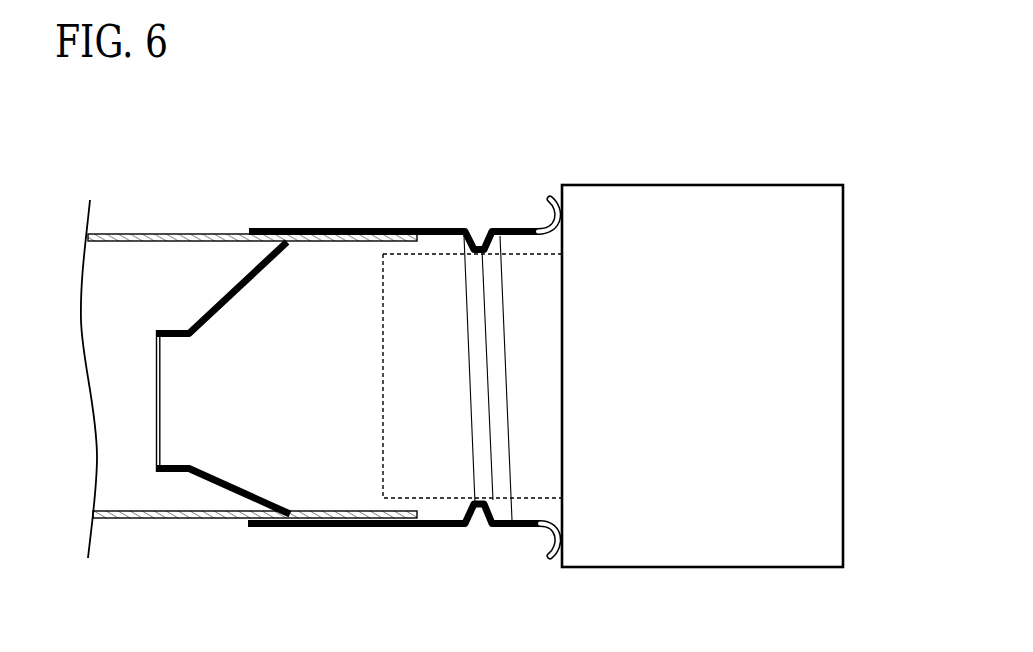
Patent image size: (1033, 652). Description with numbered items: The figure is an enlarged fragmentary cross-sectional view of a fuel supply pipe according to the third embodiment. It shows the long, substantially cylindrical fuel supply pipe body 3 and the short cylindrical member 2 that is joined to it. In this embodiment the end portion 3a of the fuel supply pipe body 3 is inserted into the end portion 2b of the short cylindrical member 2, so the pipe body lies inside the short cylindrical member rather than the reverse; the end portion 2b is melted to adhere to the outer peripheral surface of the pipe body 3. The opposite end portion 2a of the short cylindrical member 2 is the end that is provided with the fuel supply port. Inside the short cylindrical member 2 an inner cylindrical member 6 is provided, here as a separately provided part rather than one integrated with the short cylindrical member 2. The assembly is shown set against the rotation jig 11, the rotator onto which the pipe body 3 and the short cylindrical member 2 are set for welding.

The short cylindrical member 2 is at (450, 534).
The end portion 2a is at (548, 197).
The end portion 2b is at (248, 522).
The fuel supply pipe body 3 is at (168, 228).
The end portion 3a is at (287, 510).
The inner cylindrical member 6 is at (197, 317).
The rotation jig 11 is at (740, 183).